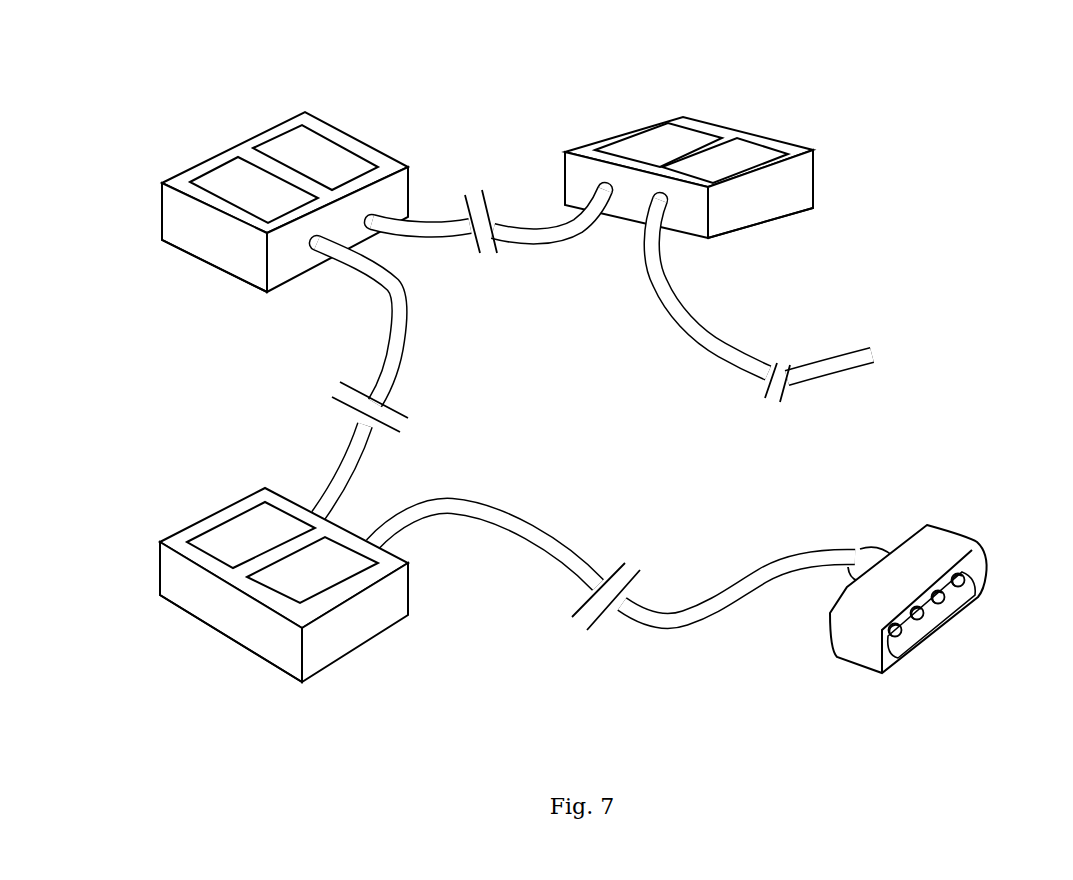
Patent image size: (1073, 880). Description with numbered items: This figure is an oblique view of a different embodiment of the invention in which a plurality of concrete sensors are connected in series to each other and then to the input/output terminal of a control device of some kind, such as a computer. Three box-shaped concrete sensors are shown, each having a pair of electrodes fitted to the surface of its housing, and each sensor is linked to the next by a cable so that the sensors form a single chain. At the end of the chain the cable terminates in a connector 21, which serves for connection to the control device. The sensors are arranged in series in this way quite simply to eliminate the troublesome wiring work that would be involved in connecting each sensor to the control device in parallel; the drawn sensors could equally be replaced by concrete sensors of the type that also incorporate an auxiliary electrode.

The connector 21 is at (943, 548).